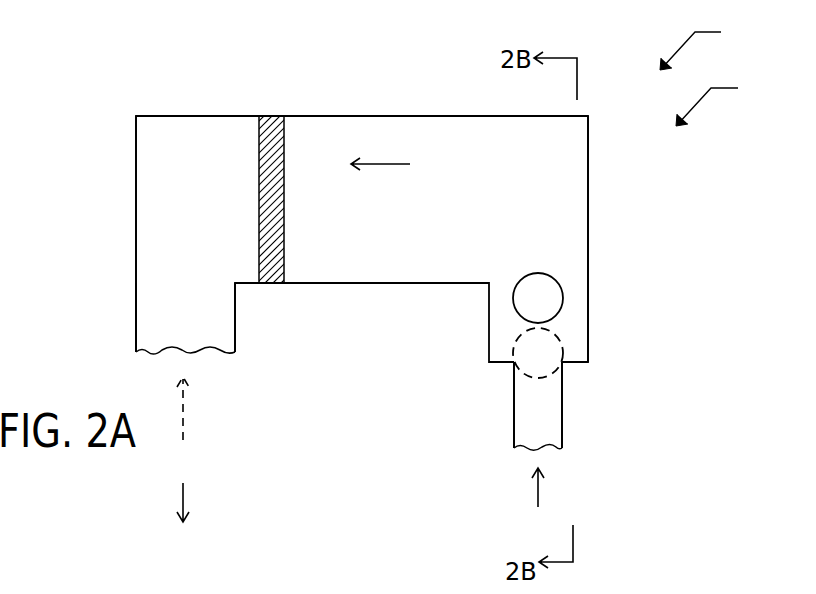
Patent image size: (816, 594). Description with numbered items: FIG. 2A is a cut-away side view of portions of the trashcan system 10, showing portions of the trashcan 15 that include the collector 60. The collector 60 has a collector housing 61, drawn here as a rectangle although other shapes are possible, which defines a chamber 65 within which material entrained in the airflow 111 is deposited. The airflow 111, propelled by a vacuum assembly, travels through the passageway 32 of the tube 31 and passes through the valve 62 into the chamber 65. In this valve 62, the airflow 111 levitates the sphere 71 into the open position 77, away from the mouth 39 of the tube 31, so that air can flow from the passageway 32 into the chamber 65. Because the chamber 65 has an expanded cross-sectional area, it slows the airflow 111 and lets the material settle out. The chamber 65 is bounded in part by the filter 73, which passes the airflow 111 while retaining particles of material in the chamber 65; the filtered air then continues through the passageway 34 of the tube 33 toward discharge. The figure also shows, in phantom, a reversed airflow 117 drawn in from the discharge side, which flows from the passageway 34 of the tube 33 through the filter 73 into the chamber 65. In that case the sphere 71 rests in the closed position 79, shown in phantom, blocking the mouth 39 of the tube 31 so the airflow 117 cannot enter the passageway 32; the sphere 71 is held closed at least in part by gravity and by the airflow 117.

The trashcan system 10 is at (706, 44).
The trashcan 15 is at (723, 101).
The tube 31 is at (562, 437).
The passageway 32 is at (551, 436).
The tube 33 is at (136, 283).
The passageway 34 is at (197, 322).
The mouth 39 is at (562, 365).
The collector 60 is at (318, 116).
The collector housing 61 is at (362, 116).
The valve 62 is at (588, 305).
The chamber 65 is at (400, 229).
The sphere 71 is at (525, 302).
The filter 73 is at (259, 158).
The open position 77 is at (545, 288).
The closed position 79 is at (570, 341).
The airflow 111 is at (386, 164).
The airflow 117 is at (188, 410).